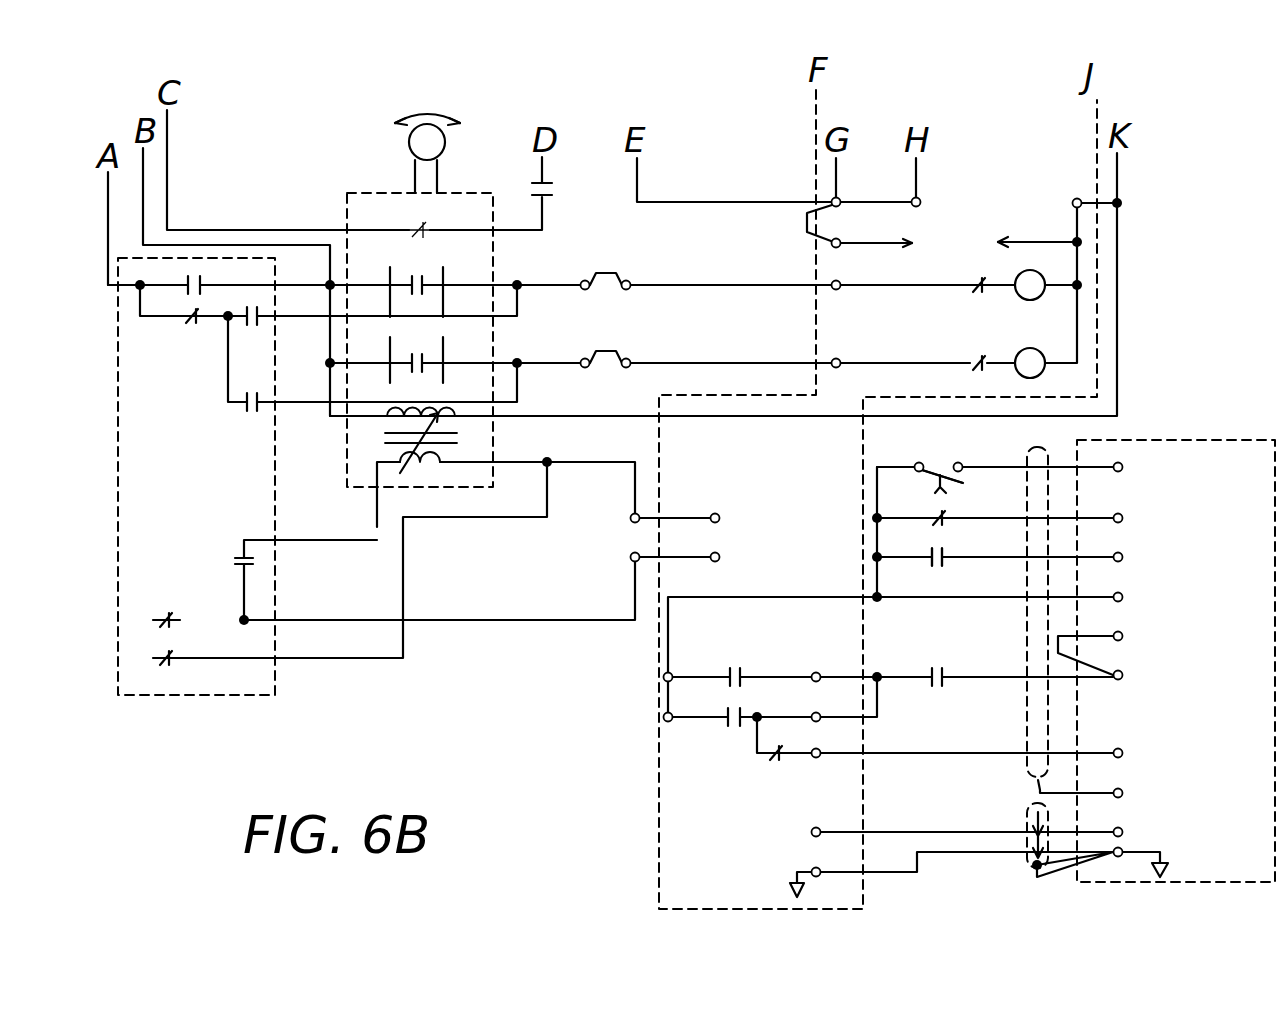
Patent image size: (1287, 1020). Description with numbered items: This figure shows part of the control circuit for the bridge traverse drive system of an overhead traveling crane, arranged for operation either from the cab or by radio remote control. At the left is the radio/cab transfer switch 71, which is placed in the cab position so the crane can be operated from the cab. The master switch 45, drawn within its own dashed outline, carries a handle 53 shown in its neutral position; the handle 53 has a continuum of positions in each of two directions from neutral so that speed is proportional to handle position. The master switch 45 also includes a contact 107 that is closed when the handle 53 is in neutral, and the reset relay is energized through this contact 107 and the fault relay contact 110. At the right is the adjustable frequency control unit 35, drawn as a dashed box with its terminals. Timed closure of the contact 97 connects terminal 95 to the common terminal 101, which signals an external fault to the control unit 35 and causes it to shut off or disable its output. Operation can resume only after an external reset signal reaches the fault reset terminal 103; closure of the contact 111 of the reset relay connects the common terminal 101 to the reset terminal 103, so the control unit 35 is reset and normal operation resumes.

The adjustable frequency control unit 35 is at (1150, 440).
The master switch 45 is at (387, 193).
The handle 53 is at (446, 142).
The radio/cab transfer switch 71 is at (200, 323).
The terminal 95 is at (1124, 468).
The contact 97 is at (942, 476).
The common terminal 101 is at (1124, 597).
The fault reset terminal 103 is at (1124, 556).
The contact 107 is at (422, 230).
The fault relay contact 110 is at (549, 197).
The contact 111 is at (942, 562).